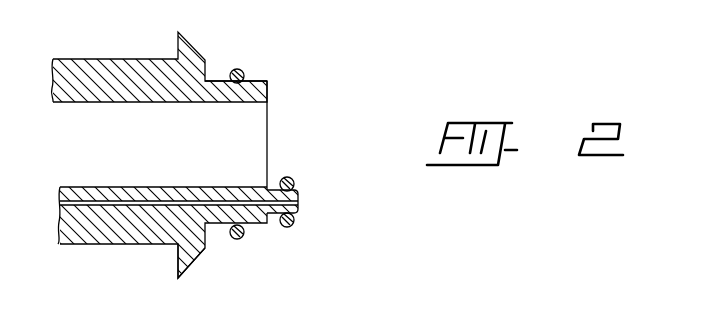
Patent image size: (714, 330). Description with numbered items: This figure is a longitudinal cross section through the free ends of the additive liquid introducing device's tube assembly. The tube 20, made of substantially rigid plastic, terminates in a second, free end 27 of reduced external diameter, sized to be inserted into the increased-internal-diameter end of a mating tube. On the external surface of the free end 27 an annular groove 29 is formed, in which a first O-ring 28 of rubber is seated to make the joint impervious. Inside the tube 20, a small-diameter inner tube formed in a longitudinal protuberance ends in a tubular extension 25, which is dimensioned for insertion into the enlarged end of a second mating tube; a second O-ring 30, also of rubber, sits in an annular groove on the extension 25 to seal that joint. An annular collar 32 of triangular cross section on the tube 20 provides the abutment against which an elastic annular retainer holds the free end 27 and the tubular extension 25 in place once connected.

The tube 20 is at (100, 59).
The tubular extension 25 is at (300, 212).
The second, free end 27 is at (257, 95).
The first O-ring 28 is at (241, 70).
The annular groove 29 is at (235, 86).
The second O-ring 30 is at (284, 227).
The annular collar 32 is at (187, 254).